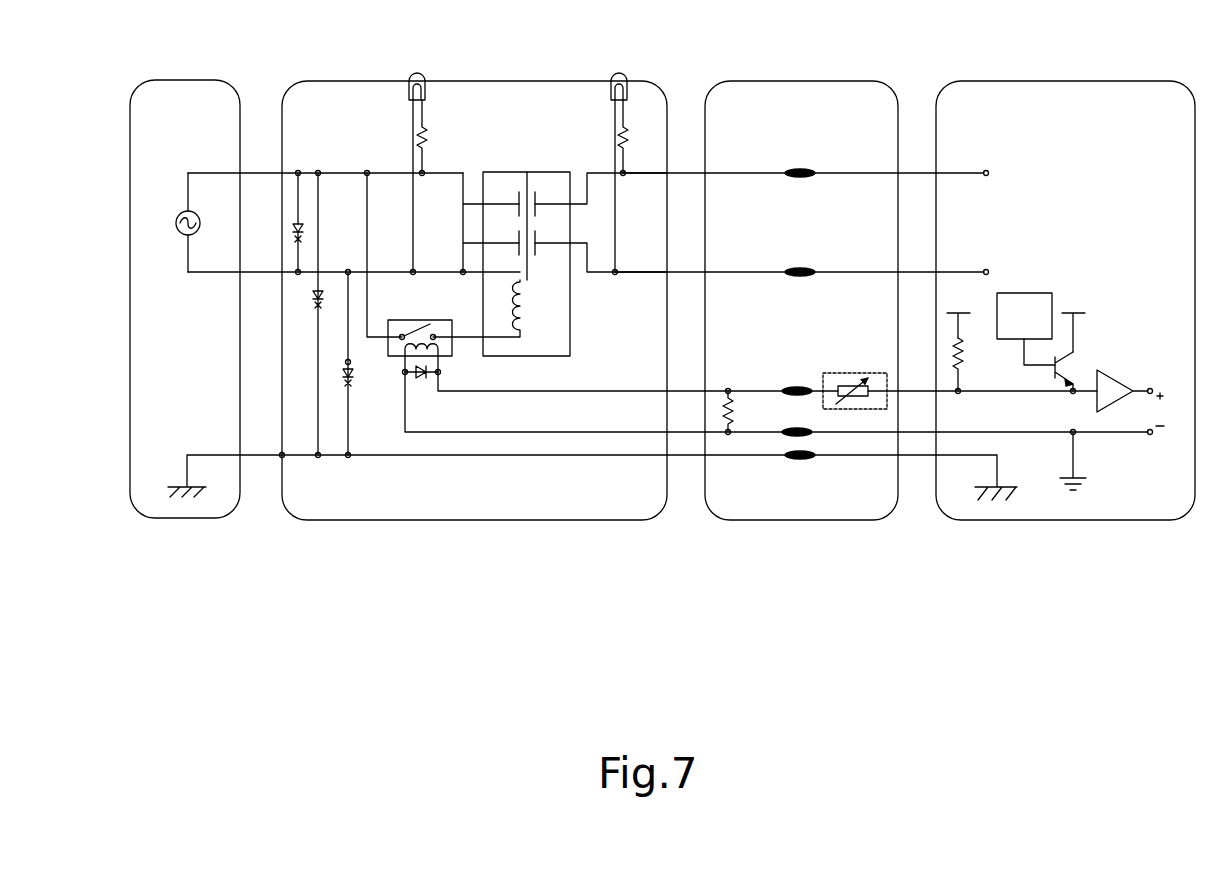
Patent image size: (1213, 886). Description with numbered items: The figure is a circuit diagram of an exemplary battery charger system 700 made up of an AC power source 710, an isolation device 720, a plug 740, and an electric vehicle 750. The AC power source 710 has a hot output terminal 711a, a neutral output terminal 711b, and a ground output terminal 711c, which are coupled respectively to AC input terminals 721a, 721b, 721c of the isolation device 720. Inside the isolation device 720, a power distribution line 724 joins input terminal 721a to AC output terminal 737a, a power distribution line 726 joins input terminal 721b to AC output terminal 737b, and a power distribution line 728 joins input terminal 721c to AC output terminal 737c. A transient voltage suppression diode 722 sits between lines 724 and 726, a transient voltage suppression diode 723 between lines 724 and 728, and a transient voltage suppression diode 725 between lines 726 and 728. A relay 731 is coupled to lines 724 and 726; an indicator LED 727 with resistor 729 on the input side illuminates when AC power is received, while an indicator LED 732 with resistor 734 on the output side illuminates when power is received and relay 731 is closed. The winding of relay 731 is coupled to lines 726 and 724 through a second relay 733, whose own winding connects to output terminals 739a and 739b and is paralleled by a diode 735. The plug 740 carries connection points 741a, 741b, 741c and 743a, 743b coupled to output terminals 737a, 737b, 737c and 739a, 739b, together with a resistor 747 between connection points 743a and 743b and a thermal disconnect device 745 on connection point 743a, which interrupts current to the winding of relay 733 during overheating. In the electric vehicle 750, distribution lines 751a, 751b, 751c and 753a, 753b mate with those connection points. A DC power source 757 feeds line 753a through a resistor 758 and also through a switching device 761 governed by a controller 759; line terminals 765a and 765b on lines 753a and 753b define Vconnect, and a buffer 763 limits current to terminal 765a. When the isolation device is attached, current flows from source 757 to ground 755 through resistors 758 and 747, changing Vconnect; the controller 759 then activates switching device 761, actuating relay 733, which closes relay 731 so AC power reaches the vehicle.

The battery charger system 700 is at (677, 574).
The AC power source 710 is at (185, 520).
The hot output terminal 711a is at (210, 172).
The neutral output terminal 711b is at (205, 273).
The ground output terminal 711c is at (208, 454).
The isolation device 720 is at (385, 520).
The AC input terminal 721a is at (283, 172).
The AC input terminal 721b is at (283, 271).
The AC input terminal 721c is at (283, 457).
The transient voltage suppression diode 722 is at (296, 226).
The transient voltage suppression diode 723 is at (317, 303).
The power distribution line 724 is at (368, 172).
The transient voltage suppression diode 725 is at (351, 378).
The power distribution line 726 is at (346, 271).
The indicator LED 727 is at (417, 74).
The power distribution line 728 is at (380, 457).
The resistor 729 is at (426, 134).
The relay 731 is at (520, 172).
The indicator LED 732 is at (619, 74).
The second relay 733 is at (450, 356).
The resistor 734 is at (626, 134).
The diode 735 is at (415, 375).
The AC output terminal 737a is at (666, 175).
The AC output terminal 737b is at (666, 274).
The AC output terminal 737c is at (666, 457).
The output terminal 739a is at (666, 390).
The output terminal 739b is at (666, 431).
The plug 740 is at (808, 520).
The electric vehicle connection point 741a is at (800, 169).
The electric vehicle connection point 741b is at (800, 268).
The electric vehicle connection point 741c is at (800, 459).
The electric vehicle connection point 743a is at (798, 388).
The electric vehicle connection point 743b is at (798, 429).
The thermal disconnect device 745 is at (856, 372).
The resistor 747 is at (731, 412).
The electric vehicle 750 is at (1078, 520).
The distribution line 751a is at (937, 173).
The distribution line 751b is at (937, 272).
The distribution line 751c is at (937, 456).
The distribution line 753a is at (937, 392).
The distribution line 753b is at (937, 433).
The ground 755 is at (1078, 478).
The DC power source 757 is at (975, 301).
The resistor 758 is at (960, 364).
The controller 759 is at (1022, 293).
The switching device 761 is at (1062, 370).
The buffer 763 is at (1095, 406).
The line terminal 765a is at (1150, 388).
The line terminal 765b is at (1150, 436).